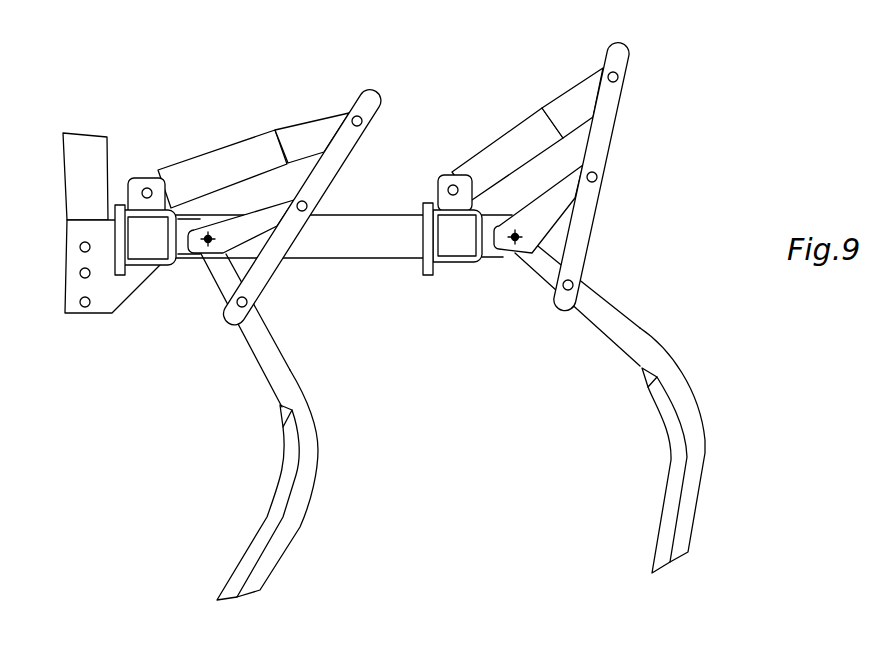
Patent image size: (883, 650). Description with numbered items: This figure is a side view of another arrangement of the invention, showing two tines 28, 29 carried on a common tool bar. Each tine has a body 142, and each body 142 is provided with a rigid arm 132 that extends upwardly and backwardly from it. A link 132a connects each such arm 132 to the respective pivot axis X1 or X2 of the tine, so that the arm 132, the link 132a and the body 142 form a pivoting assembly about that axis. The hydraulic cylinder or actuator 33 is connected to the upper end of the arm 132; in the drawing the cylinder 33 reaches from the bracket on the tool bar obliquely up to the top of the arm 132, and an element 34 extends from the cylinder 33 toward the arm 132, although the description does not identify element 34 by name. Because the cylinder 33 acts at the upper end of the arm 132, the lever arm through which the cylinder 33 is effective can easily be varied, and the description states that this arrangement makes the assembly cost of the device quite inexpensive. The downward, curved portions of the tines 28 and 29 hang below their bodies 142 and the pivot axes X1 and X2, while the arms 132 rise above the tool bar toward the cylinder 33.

The tine 28 is at (322, 461).
The tine 29 is at (706, 406).
The hydraulic cylinder 33 is at (223, 155).
The piston rod 34 is at (298, 137).
The rigid arm 132 is at (323, 178).
The link 132a is at (235, 233).
The body 142 is at (283, 372).
The pivot axis X1 is at (203, 250).
The pivot axis X2 is at (512, 243).